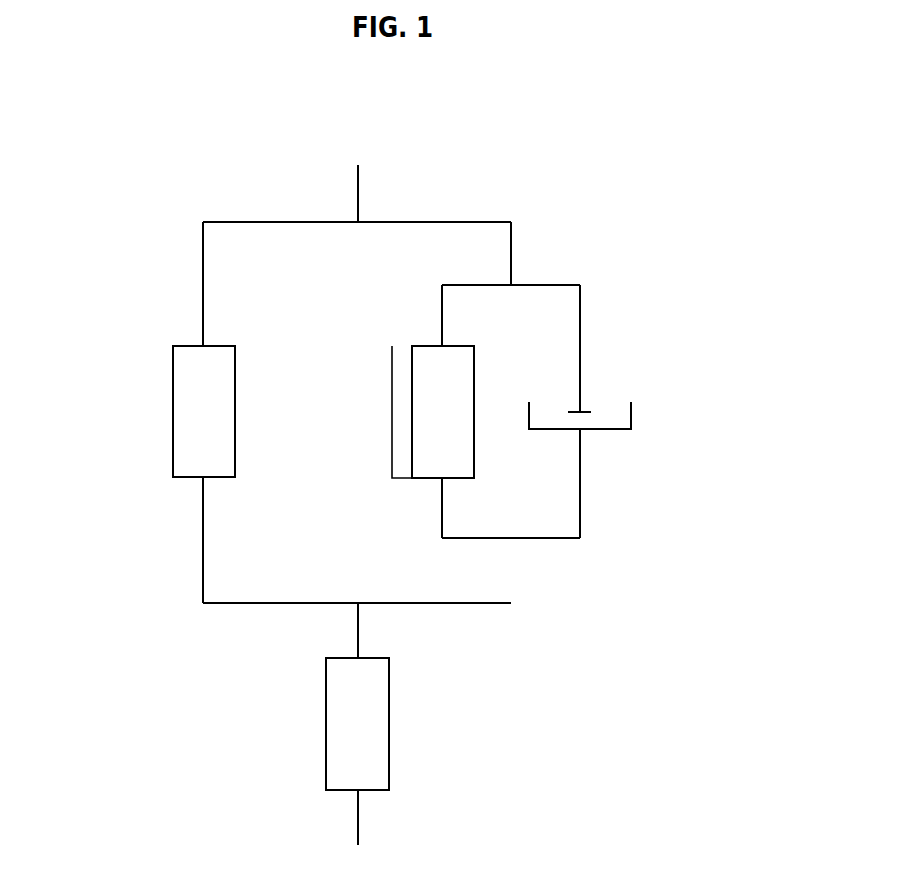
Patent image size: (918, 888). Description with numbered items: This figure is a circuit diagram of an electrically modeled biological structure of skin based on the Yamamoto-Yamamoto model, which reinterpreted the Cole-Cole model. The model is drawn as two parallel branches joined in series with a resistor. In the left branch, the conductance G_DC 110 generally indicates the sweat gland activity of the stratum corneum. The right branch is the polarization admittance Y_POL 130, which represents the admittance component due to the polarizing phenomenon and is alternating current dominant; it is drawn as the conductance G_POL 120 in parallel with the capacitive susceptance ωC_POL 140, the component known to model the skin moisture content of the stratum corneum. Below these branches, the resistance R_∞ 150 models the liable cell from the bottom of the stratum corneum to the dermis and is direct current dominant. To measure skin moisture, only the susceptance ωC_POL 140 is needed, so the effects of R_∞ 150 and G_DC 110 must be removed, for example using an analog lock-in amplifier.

The G_DC 110 is at (173, 410).
The G_POL 120 is at (462, 478).
The Y_POL 130 is at (498, 409).
The ωC_POL 140 is at (736, 510).
The R_∞ 150 is at (389, 723).